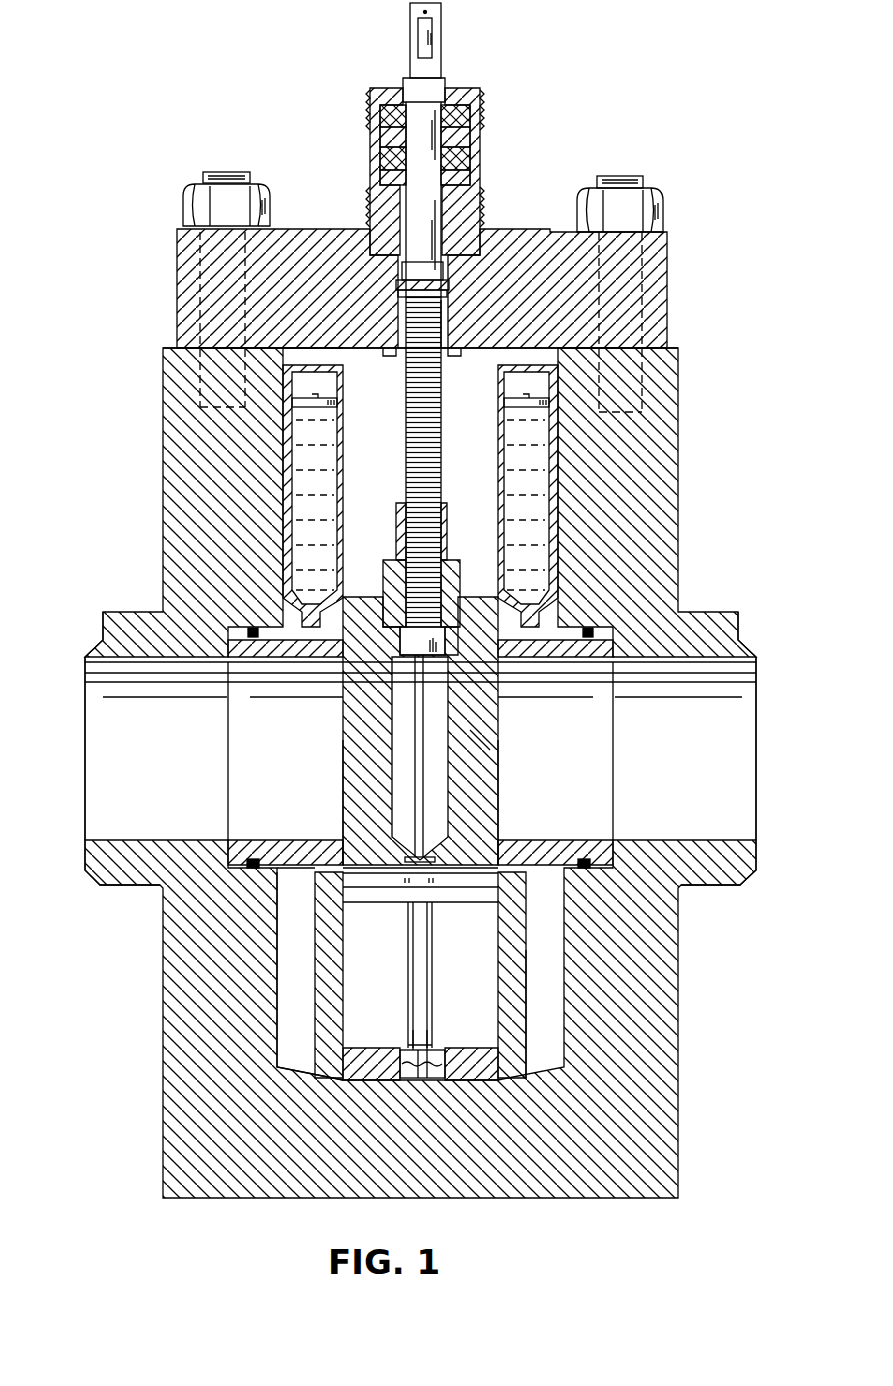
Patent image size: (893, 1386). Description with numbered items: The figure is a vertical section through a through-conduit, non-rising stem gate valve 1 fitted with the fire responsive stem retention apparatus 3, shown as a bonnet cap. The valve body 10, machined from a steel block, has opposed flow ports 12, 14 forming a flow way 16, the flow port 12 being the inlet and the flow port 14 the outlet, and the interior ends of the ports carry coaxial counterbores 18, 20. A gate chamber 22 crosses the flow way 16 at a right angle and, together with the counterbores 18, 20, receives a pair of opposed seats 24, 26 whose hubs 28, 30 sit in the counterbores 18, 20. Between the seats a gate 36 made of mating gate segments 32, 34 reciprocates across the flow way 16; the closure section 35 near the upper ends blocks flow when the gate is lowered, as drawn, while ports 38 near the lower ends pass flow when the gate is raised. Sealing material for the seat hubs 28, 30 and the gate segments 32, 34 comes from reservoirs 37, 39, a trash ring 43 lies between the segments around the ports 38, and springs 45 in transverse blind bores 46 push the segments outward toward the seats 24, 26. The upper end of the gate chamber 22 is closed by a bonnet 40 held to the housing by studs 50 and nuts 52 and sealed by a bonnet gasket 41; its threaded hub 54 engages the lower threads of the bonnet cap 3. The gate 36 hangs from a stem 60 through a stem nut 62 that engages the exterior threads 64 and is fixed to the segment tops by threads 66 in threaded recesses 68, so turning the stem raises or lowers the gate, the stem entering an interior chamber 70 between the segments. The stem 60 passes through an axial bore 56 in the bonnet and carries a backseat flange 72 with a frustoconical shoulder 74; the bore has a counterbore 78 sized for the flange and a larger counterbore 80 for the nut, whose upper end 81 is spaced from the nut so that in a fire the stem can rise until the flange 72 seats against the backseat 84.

The gate valve 1 is at (712, 408).
The fire responsive stem retention apparatus 3 is at (467, 150).
The valve body 10 is at (680, 450).
The flow port 12 is at (97, 833).
The flow port 14 is at (683, 835).
The flow way 16 is at (146, 737).
The counterbore 18 is at (250, 868).
The counterbore 20 is at (592, 863).
The gate chamber 22 is at (397, 520).
The seat 24 is at (337, 968).
The seat 26 is at (498, 958).
The seat hub 28 is at (268, 842).
The seat hub 30 is at (555, 846).
The gate segment 32 is at (343, 782).
The gate segment 34 is at (498, 775).
The closure section 35 is at (480, 745).
The gate 36 is at (350, 752).
The sealant reservoir 37 is at (343, 490).
The ports 38 is at (497, 998).
The sealant reservoir 39 is at (500, 472).
The bonnet 40 is at (177, 278).
The bonnet gasket 41 is at (283, 352).
The trash ring 43 is at (432, 940).
The springs 45 is at (428, 1040).
The blind bores 46 is at (403, 1080).
The studs 50 is at (224, 175).
The nuts 52 is at (192, 203).
The threaded hub 54 is at (465, 212).
The axial bore 56 is at (424, 150).
The stem 60 is at (406, 452).
The stem nut 62 is at (460, 566).
The exterior threads 64 is at (441, 436).
The threads 66 is at (453, 665).
The threaded recesses 68 is at (383, 597).
The interior chamber 70 is at (435, 806).
The backseat flange 72 is at (398, 316).
The frustoconical shoulder 74 is at (398, 288).
The counterbore 78 is at (445, 336).
The counterbore 80 is at (457, 356).
The upper end 81 is at (388, 356).
The backseat 84 is at (402, 270).